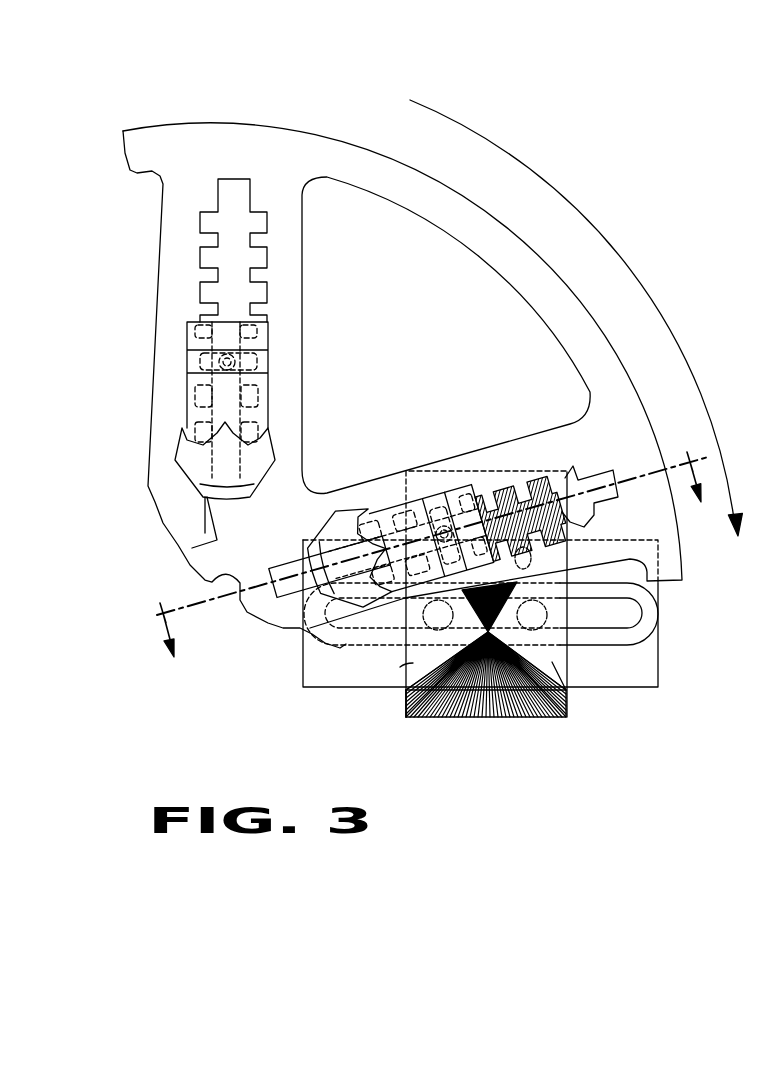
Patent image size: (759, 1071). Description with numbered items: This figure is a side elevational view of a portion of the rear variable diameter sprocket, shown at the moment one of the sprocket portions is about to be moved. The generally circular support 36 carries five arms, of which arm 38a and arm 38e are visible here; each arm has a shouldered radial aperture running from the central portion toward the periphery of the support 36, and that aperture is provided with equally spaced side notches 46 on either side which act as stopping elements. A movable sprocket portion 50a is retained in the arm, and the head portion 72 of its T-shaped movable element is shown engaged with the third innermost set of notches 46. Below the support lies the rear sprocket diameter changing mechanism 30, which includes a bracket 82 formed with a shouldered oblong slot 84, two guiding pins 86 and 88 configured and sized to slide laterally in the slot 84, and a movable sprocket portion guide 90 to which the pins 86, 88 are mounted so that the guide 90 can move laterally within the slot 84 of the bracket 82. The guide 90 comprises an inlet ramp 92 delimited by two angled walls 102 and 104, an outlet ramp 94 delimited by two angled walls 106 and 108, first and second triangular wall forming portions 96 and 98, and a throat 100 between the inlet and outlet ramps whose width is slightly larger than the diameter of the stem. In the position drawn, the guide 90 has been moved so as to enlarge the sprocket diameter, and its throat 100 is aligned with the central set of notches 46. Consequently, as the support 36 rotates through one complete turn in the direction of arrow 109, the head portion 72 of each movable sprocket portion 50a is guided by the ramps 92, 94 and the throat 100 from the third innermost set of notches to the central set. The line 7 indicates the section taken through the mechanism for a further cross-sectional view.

The support 36 is at (281, 183).
The arm 38e is at (284, 255).
The arrow 109 is at (603, 233).
The section line 7- 7 is at (425, 543).
The arm 38a is at (390, 490).
The bracket 82 is at (655, 688).
The side notches 46 is at (563, 473).
The movable sprocket portion 50a is at (385, 520).
The head portion 72 is at (437, 517).
The inlet ramp 92 is at (498, 487).
The angled wall 104 is at (318, 542).
The angled wall 102 is at (560, 552).
The shouldered oblong slot 84 is at (622, 613).
The guiding pin 86 is at (393, 630).
The guiding pin 88 is at (548, 620).
The rear sprocket diameter changing mechanism 30 is at (572, 722).
The outlet ramp 94 is at (510, 717).
The throat 100 is at (480, 717).
The angled wall 108 is at (447, 717).
The angled wall 106 is at (537, 717).
The movable sprocket portion guide 90 is at (408, 722).
The first triangular wall forming portion 96 is at (413, 663).
The second triangular wall forming portion 98 is at (552, 662).